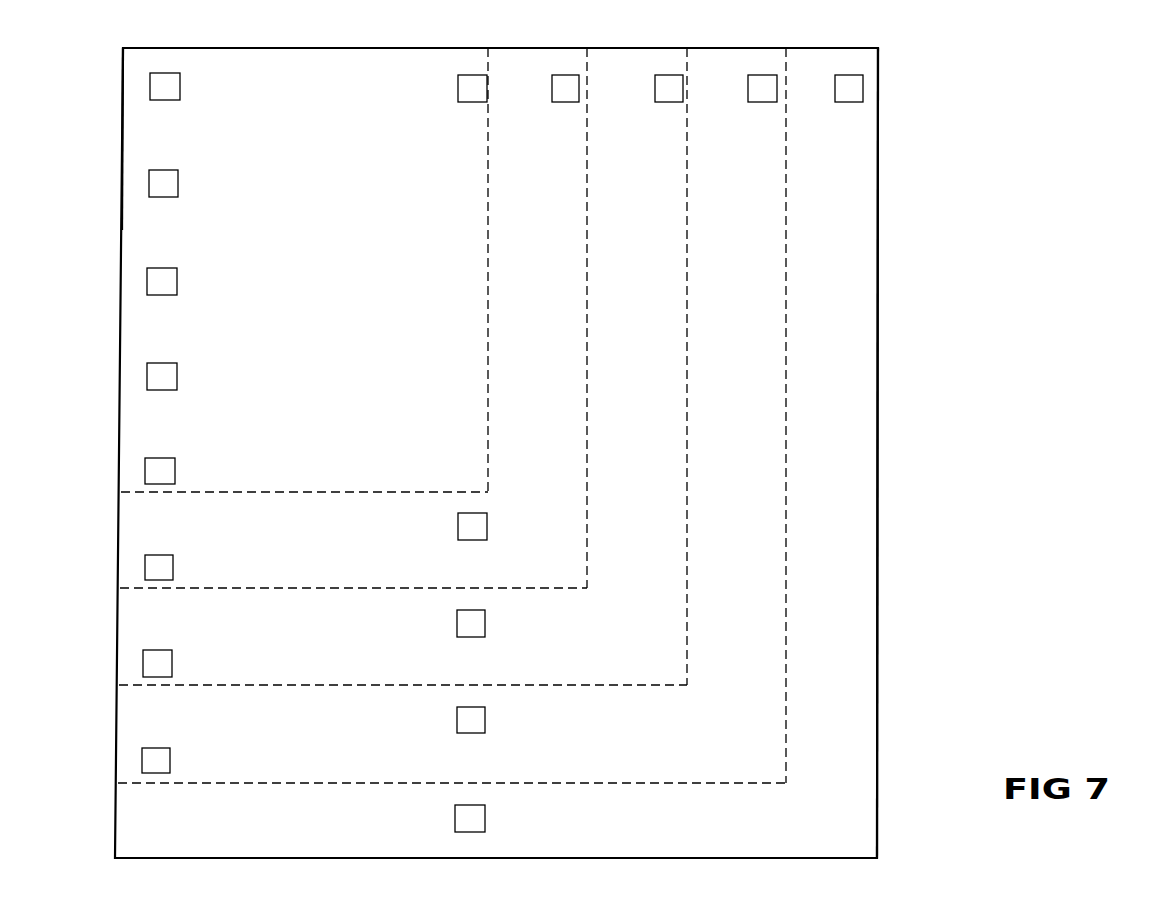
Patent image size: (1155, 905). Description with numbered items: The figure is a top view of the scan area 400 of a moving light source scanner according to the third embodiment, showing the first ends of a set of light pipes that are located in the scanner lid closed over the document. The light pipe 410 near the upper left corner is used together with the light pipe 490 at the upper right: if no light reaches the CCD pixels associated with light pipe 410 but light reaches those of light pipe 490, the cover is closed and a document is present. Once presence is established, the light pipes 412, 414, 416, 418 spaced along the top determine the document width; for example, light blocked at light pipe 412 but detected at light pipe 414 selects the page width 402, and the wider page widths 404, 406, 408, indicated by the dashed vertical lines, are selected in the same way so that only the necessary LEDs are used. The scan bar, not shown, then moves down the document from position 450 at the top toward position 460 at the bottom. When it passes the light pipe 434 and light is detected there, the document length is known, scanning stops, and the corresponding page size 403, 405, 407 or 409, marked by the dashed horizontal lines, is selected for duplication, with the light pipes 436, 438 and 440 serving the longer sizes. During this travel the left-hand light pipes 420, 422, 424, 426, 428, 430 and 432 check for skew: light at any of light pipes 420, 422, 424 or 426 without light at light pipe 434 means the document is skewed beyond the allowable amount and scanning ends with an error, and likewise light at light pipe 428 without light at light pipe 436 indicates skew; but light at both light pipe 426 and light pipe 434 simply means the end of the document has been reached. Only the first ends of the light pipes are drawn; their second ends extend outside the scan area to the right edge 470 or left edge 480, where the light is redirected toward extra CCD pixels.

The scan area 400 is at (853, 848).
The page width 402 is at (488, 180).
The page size 403 is at (207, 496).
The page width 404 is at (587, 180).
The page size 405 is at (207, 590).
The page width 406 is at (687, 180).
The page size 407 is at (207, 688).
The page width 408 is at (786, 173).
The page size 409 is at (252, 787).
The light pipe 410 is at (165, 101).
The light pipe 412 is at (472, 103).
The light pipe 414 is at (552, 90).
The light pipe 416 is at (655, 88).
The light pipe 418 is at (748, 88).
The light pipe 420 is at (163, 198).
The light pipe 422 is at (167, 268).
The light pipe 424 is at (167, 363).
The light pipe 426 is at (165, 458).
The light pipe 428 is at (173, 575).
The light pipe 430 is at (172, 670).
The light pipe 432 is at (170, 770).
The light pipe 434 is at (487, 530).
The light pipe 436 is at (485, 615).
The light pipe 438 is at (485, 717).
The light pipe 440 is at (485, 815).
The position 450 is at (148, 47).
The position 460 is at (140, 857).
The right edge 470 is at (877, 460).
The left edge 480 is at (122, 202).
The light pipe 490 is at (835, 88).